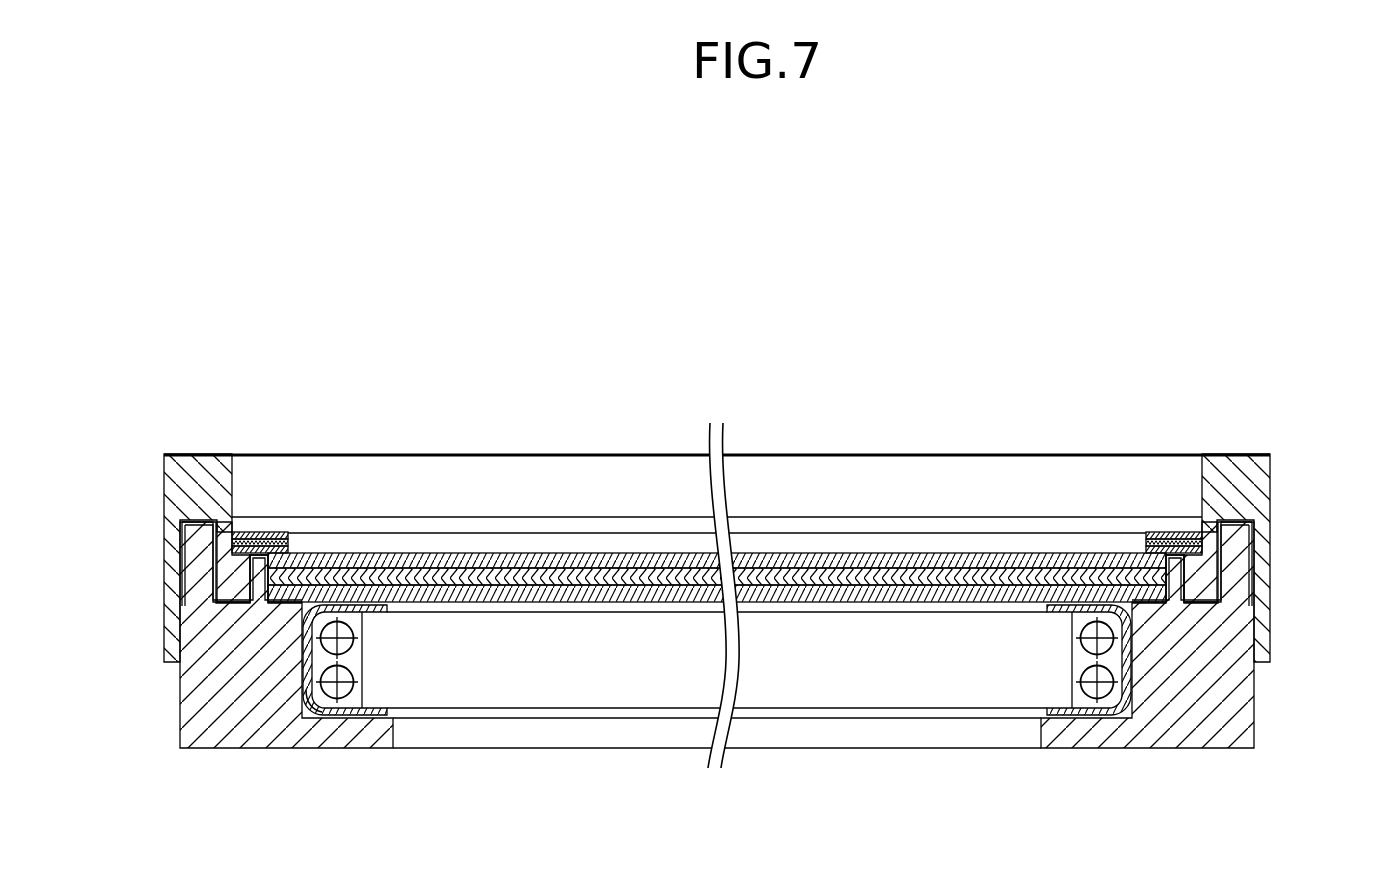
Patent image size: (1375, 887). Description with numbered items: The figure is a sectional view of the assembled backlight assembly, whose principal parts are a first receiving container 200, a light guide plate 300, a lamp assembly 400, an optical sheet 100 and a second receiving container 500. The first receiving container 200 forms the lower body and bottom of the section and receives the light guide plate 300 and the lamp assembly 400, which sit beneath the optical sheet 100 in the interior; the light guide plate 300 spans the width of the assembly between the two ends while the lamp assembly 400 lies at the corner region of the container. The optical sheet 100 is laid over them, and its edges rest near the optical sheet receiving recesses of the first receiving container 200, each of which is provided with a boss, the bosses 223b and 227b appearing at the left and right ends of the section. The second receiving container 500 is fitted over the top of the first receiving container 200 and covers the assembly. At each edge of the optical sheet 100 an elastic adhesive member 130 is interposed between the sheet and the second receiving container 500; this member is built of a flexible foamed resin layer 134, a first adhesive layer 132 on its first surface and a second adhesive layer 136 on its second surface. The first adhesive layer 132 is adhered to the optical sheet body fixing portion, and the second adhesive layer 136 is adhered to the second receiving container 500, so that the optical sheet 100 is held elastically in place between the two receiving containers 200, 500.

The optical sheet 100 is at (570, 520).
The elastic adhesive member 130 is at (717, 451).
The first adhesive layer 132 is at (288, 552).
The flexible foamed resin layer 134 is at (288, 543).
The second adhesive layer 136 is at (288, 535).
The first receiving container 200 is at (340, 772).
The boss 223b is at (259, 588).
The boss 227b is at (1180, 574).
The light guide plate 300 is at (530, 690).
The lamp assembly 400 is at (292, 728).
The second receiving container 500 is at (208, 416).